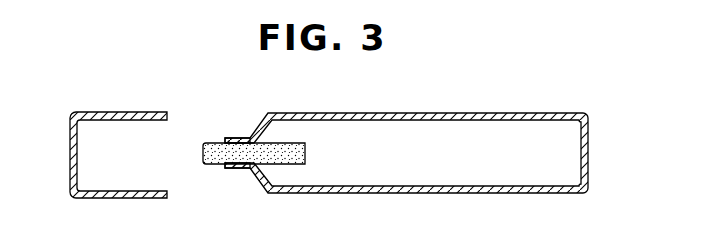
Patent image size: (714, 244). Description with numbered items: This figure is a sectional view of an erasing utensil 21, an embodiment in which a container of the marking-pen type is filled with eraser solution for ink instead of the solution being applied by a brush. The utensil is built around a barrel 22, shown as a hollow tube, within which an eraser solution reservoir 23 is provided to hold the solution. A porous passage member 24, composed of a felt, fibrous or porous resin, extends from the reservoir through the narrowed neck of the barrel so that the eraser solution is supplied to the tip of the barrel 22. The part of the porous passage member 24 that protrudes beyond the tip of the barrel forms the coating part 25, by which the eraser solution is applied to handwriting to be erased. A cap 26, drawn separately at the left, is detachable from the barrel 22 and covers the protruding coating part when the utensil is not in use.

The erasing utensil 21 is at (406, 137).
The barrel 22 is at (406, 137).
The eraser solution reservoir 23 is at (508, 138).
The porous passage member 24 is at (289, 155).
The coating part 25 is at (208, 142).
The cap 26 is at (122, 112).